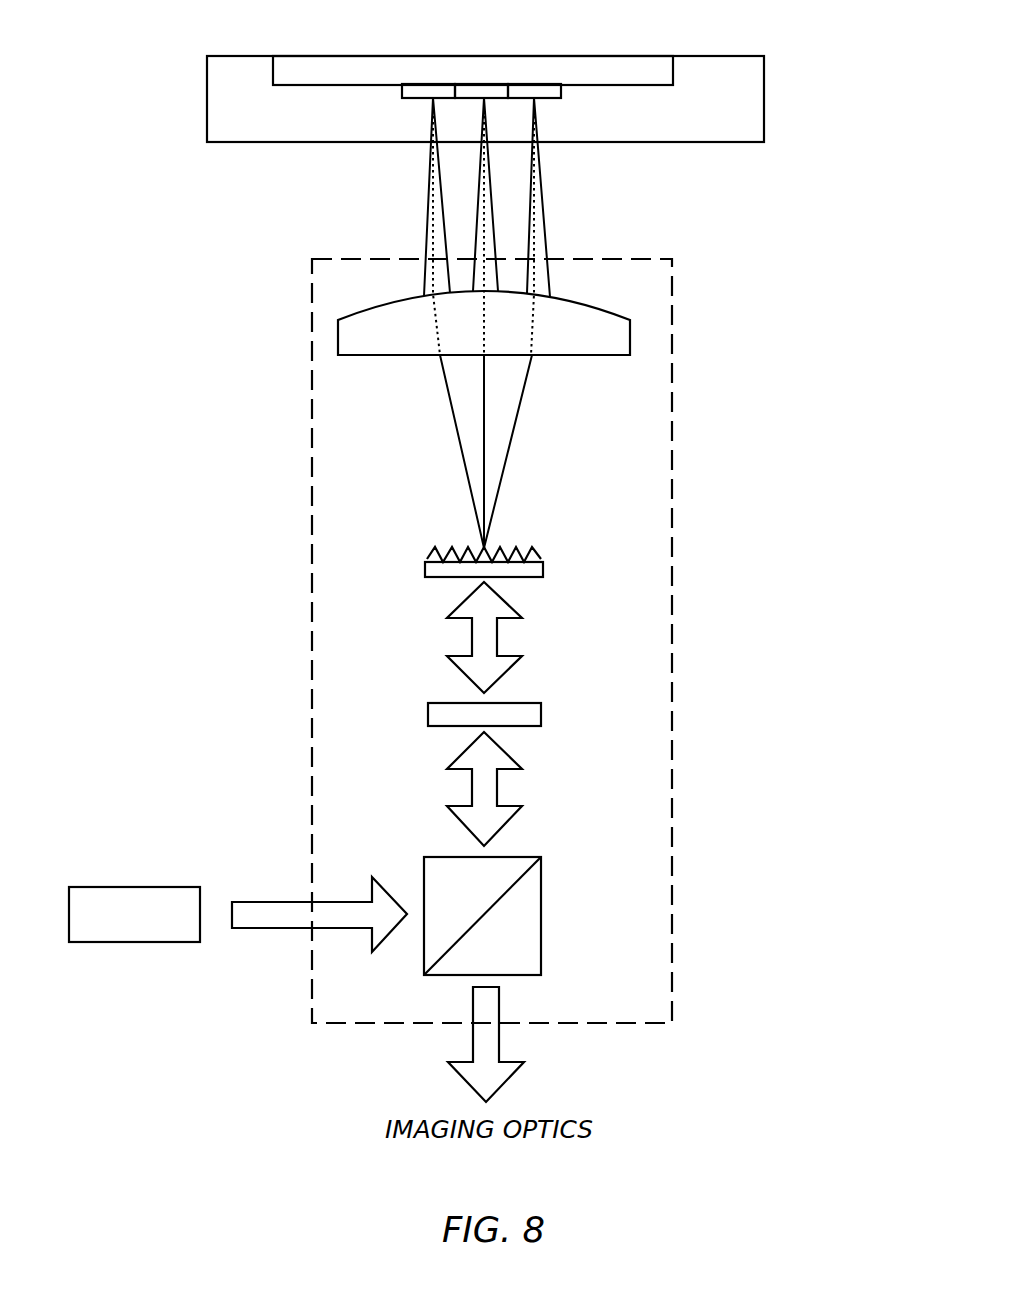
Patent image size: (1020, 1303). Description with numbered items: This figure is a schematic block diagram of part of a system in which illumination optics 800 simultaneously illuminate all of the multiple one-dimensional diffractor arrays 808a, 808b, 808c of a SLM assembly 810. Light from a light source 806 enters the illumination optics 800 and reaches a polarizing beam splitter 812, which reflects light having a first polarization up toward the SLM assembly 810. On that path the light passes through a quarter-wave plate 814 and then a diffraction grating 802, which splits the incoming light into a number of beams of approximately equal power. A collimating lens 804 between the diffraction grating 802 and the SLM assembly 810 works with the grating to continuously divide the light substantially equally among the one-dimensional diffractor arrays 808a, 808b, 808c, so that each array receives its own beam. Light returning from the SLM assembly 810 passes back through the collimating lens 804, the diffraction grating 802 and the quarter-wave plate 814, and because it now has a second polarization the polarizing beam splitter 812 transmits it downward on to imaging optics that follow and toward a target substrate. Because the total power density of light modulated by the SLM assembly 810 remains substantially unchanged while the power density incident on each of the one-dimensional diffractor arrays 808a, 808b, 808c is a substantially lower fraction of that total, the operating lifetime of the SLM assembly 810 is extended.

The illumination optics 800 is at (672, 560).
The diffraction grating 802 is at (427, 566).
The collimating lens 804 is at (586, 357).
The light source 806 is at (134, 914).
The 1D diffractor array 808a is at (405, 100).
The 1D diffractor array 808b is at (486, 84).
The 1D diffractor array 808c is at (556, 98).
The SLM assembly 810 is at (485, 99).
The polarizing beam splitter 812 is at (541, 930).
The quarter-wave plate 814 is at (541, 710).